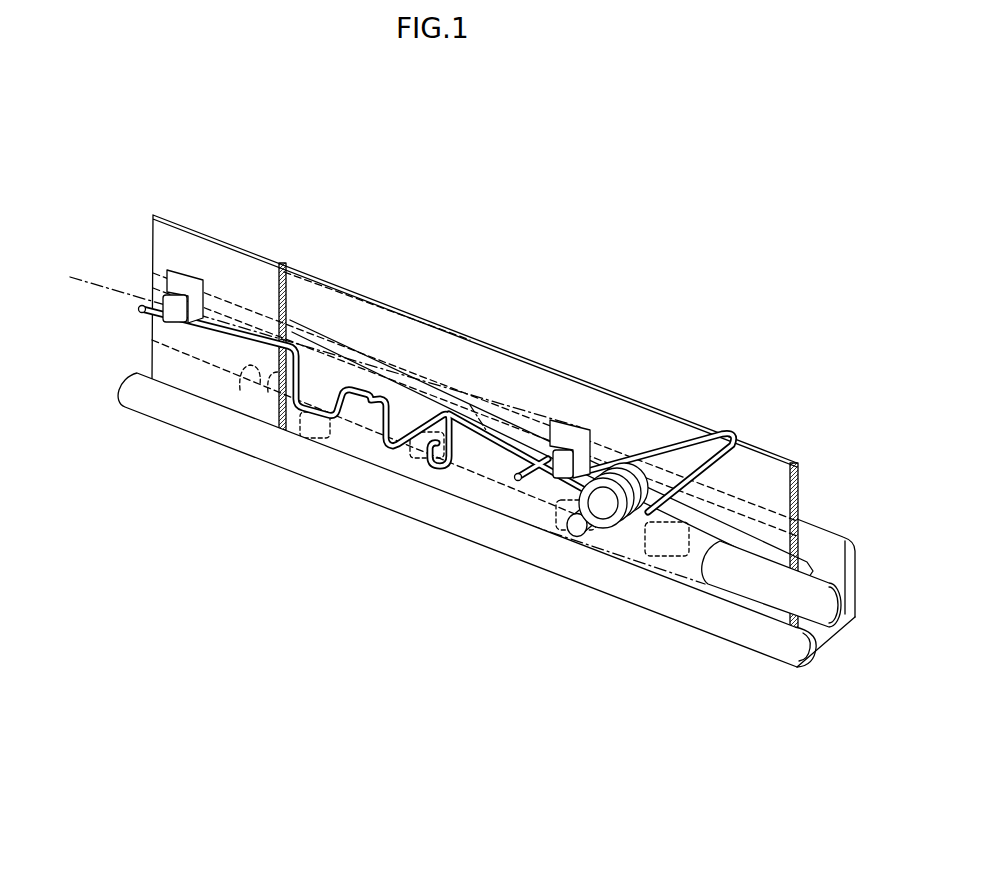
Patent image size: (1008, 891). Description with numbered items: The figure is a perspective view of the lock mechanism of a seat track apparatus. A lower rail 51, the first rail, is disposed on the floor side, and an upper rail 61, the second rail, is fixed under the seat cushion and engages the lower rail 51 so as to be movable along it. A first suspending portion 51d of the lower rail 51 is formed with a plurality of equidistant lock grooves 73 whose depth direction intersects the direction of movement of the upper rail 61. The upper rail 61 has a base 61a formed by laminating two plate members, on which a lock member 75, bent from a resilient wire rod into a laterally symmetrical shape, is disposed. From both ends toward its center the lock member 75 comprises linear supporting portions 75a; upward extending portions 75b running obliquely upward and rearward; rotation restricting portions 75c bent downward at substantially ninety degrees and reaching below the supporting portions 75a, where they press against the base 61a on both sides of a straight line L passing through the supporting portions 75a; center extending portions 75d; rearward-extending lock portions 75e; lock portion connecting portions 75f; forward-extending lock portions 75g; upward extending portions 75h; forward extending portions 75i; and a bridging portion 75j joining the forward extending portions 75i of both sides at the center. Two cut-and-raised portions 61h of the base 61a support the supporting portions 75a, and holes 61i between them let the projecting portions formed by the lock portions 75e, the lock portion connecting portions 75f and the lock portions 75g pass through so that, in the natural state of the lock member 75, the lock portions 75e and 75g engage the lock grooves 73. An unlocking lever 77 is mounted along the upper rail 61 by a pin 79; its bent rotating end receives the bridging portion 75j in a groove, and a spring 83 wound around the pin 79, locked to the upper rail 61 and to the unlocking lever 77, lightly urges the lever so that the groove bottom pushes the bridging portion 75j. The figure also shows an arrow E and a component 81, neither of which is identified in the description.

The lower rail 51 is at (632, 613).
The first suspending portion 51d is at (812, 537).
The upper rail 61 is at (640, 396).
The base 61a is at (215, 258).
The cut-and-raised portions 61h is at (178, 300).
The holes 61i is at (309, 420).
The lock grooves 73 is at (478, 413).
The lock member 75 is at (397, 395).
The supporting portions 75a is at (146, 312).
The upward extending portions 75b is at (219, 343).
The rotation restricting portions 75c is at (283, 423).
The center extending portions 75d is at (296, 428).
The lock portions 75e is at (322, 425).
The lock portion connecting portions 75f is at (372, 385).
The lock portions 75g is at (378, 425).
The upward extending portions 75h is at (358, 395).
The forward extending portions 75i is at (343, 387).
The bridging portion 75j is at (361, 388).
The unlocking lever 77 is at (683, 582).
The pin 79 is at (580, 537).
The rod 81 is at (720, 578).
The spring 83 is at (687, 448).
The straight line L is at (108, 288).
The direction E is at (260, 542).